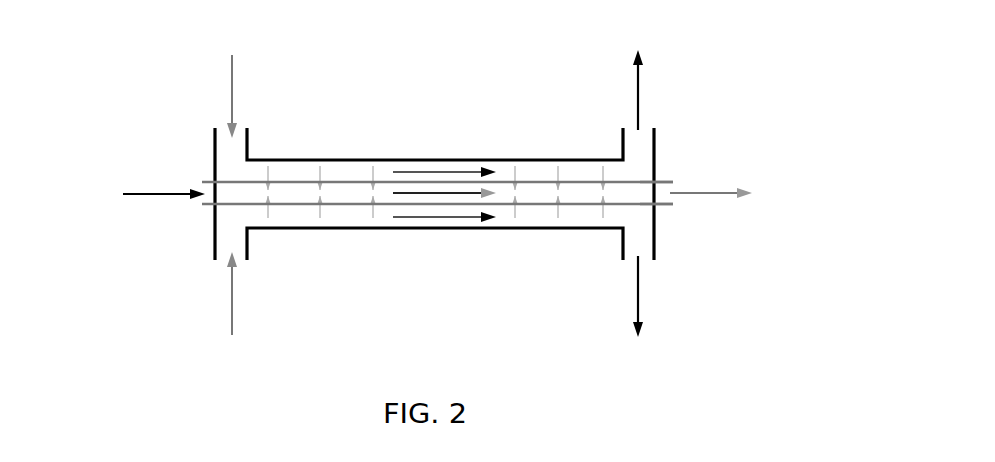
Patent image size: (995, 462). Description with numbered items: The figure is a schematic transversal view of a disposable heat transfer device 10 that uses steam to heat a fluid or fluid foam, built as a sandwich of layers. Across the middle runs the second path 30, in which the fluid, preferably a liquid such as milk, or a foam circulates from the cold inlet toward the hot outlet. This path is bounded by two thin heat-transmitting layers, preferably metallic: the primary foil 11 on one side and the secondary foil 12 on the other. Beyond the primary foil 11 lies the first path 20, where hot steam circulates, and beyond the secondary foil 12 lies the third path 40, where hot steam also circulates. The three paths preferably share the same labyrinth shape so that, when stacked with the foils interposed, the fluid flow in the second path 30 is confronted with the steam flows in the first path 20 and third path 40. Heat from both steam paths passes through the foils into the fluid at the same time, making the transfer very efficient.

The disposable heat transfer device 10 is at (450, 197).
The third path 40 is at (293, 172).
The first path 20 is at (298, 217).
The second path 30 is at (347, 197).
The secondary foil 12 is at (663, 180).
The primary foil 11 is at (662, 206).